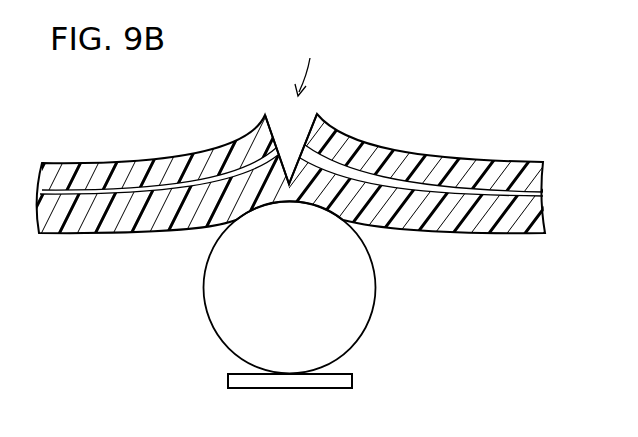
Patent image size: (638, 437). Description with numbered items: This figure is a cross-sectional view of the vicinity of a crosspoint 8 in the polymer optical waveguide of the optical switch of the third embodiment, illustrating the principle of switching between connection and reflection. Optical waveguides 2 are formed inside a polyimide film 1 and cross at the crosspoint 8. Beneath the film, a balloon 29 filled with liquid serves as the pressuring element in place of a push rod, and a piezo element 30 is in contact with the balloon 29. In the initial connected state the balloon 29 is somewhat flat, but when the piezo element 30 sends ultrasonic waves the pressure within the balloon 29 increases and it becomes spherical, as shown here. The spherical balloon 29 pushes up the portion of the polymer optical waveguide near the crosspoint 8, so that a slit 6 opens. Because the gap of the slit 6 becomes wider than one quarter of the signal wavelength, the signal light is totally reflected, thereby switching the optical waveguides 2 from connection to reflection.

The polyimide film 1 is at (498, 218).
The optical waveguides 2 is at (463, 192).
The slit 6 is at (288, 140).
The crosspoint 8 is at (304, 64).
The balloon 29 is at (342, 287).
The piezo element 30 is at (333, 380).